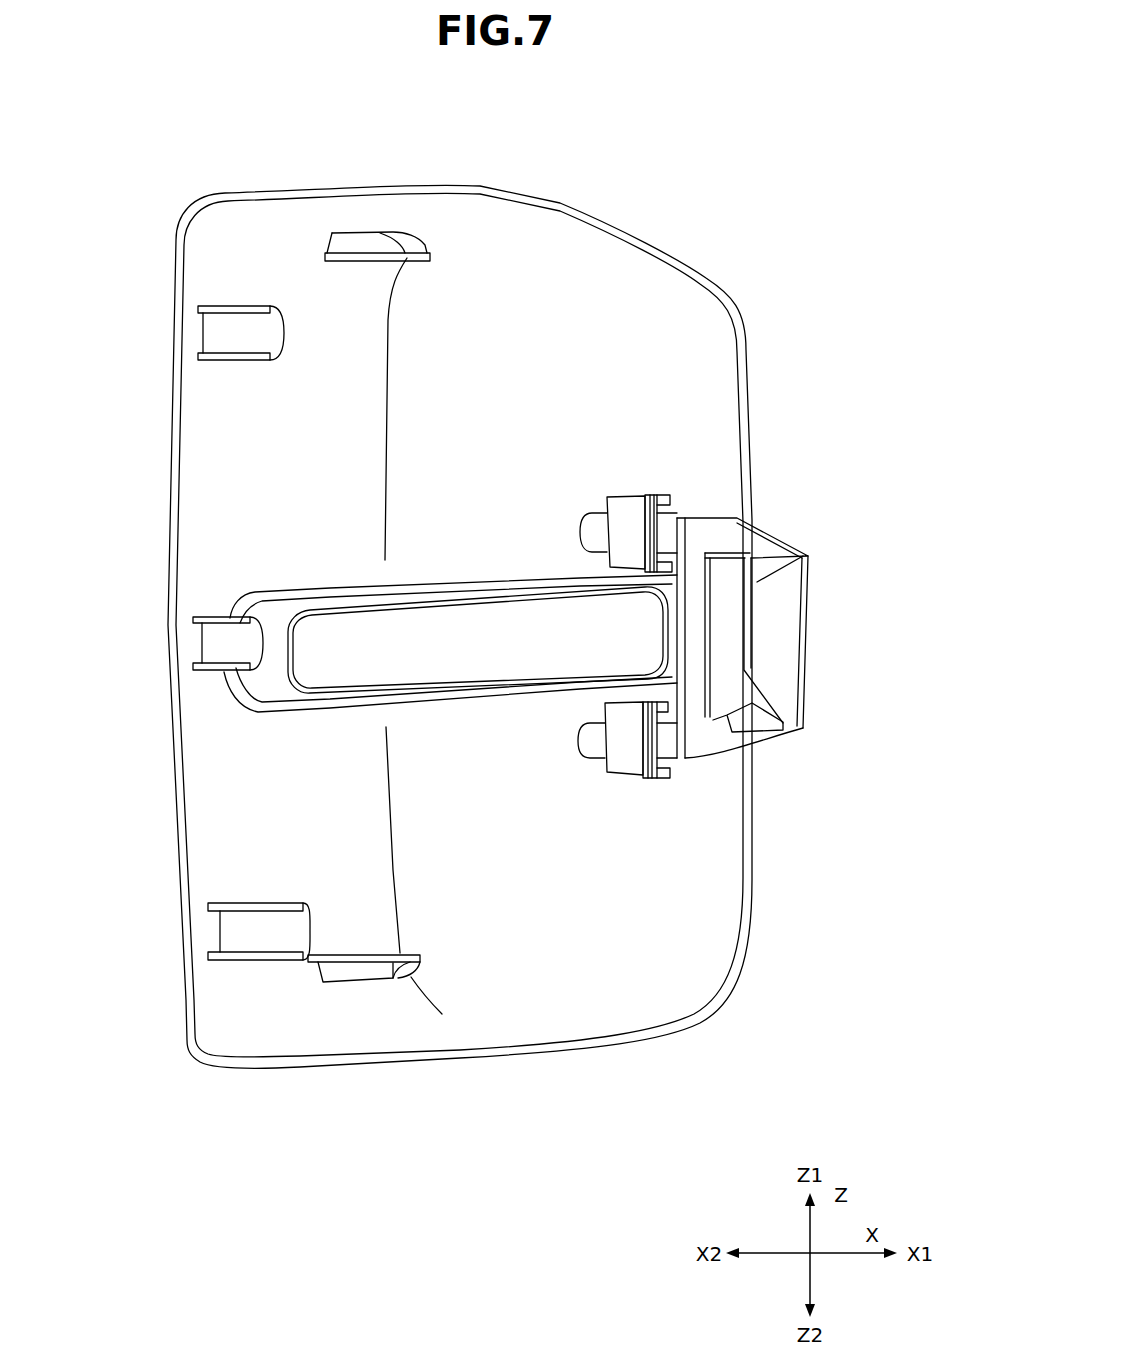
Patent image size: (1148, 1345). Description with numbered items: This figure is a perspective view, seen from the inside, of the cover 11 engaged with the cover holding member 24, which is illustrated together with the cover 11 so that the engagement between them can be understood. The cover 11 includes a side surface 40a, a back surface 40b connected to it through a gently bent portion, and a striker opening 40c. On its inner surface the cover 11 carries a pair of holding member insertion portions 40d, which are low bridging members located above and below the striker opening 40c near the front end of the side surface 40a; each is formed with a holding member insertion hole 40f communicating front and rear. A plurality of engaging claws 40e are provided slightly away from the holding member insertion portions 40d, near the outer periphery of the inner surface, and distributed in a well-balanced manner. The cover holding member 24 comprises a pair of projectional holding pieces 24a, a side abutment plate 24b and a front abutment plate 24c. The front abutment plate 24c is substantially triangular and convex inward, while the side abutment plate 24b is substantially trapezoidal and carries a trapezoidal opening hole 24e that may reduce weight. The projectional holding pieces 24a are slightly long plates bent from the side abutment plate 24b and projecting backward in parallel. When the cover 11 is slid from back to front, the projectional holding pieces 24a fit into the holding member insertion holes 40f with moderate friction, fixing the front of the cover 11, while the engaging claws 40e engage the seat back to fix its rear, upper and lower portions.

The cover 11 is at (652, 213).
The side surface 40a is at (664, 300).
The back surface 40b is at (256, 512).
The striker opening 40c is at (453, 612).
The holding member insertion portion 40d is at (628, 510).
The engaging claw 40e is at (352, 234).
The holding member insertion hole 40f is at (665, 512).
The cover holding member 24 is at (808, 523).
The projectional holding piece 24a is at (592, 532).
The side abutment plate 24b is at (757, 545).
The front abutment plate 24c is at (800, 628).
The opening hole 24e is at (745, 744).